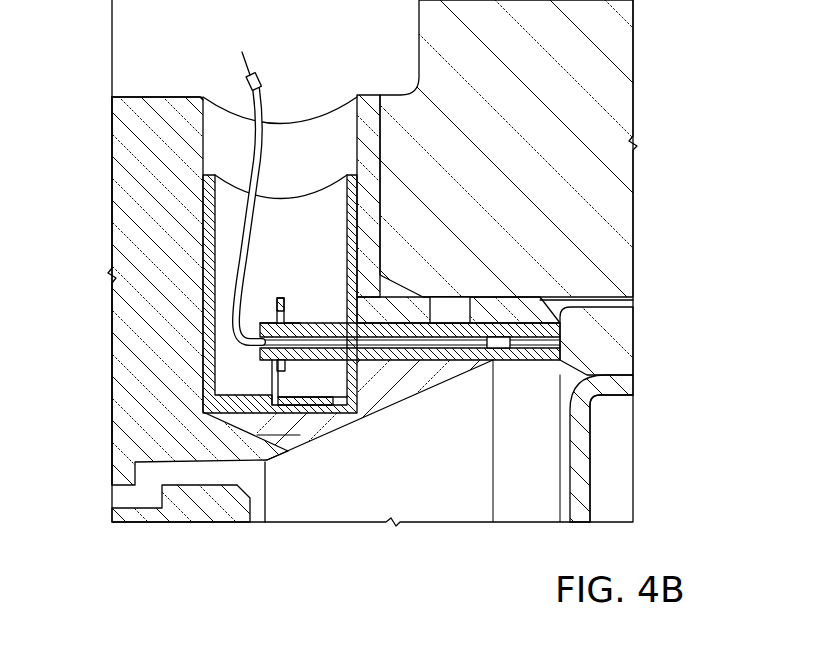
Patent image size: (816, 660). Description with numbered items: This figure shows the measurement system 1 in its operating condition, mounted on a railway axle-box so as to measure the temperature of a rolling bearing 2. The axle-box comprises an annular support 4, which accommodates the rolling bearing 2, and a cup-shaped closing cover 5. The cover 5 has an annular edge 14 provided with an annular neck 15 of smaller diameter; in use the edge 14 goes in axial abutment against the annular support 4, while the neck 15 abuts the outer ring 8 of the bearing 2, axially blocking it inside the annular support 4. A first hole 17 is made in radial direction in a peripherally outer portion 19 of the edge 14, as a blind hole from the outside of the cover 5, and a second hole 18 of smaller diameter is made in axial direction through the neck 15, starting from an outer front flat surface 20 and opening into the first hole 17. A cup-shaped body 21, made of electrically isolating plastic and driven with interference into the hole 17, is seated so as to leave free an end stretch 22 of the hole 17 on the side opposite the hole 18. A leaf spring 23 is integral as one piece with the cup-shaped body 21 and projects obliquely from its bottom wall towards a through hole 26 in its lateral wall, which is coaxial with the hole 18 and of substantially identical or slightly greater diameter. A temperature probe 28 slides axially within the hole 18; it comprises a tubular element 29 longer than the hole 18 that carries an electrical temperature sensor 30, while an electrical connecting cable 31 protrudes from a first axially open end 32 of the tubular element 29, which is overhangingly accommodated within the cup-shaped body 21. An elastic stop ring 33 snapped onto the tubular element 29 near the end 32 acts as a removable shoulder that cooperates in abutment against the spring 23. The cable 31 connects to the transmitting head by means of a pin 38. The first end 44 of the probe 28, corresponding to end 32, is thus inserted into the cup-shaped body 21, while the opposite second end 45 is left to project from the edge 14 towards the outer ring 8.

The system 1 is at (340, 500).
The rolling bearing 2 is at (615, 432).
The annular support 4 is at (620, 95).
The closing cover 5 is at (146, 155).
The outer ring 8 is at (624, 350).
The annular edge 14 is at (138, 302).
The annular neck 15 is at (505, 305).
The first hole 17 is at (340, 218).
The second hole 18 is at (438, 364).
The peripherally outer portion 19 is at (153, 122).
The outer front flat surface 20 is at (557, 477).
The cup-shaped body 21 is at (228, 205).
The end stretch 22 is at (338, 128).
The spring 23 is at (206, 396).
The through hole 26 is at (331, 374).
The temperature probe 28 is at (540, 366).
The tubular element 29 is at (434, 347).
The electrical temperature sensor 30 is at (500, 350).
The electrical connecting cable 31 is at (248, 145).
The first axially open end 32 is at (272, 320).
The elastic stop ring 33 is at (289, 318).
The pin 38 is at (256, 62).
The first end 44 is at (264, 366).
The second end 45 is at (568, 332).